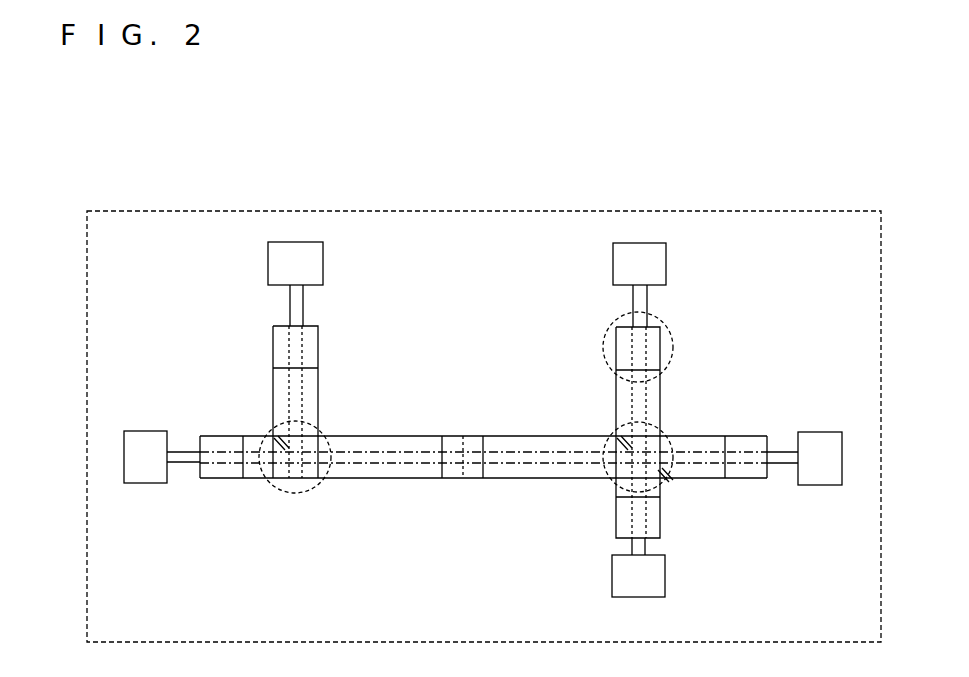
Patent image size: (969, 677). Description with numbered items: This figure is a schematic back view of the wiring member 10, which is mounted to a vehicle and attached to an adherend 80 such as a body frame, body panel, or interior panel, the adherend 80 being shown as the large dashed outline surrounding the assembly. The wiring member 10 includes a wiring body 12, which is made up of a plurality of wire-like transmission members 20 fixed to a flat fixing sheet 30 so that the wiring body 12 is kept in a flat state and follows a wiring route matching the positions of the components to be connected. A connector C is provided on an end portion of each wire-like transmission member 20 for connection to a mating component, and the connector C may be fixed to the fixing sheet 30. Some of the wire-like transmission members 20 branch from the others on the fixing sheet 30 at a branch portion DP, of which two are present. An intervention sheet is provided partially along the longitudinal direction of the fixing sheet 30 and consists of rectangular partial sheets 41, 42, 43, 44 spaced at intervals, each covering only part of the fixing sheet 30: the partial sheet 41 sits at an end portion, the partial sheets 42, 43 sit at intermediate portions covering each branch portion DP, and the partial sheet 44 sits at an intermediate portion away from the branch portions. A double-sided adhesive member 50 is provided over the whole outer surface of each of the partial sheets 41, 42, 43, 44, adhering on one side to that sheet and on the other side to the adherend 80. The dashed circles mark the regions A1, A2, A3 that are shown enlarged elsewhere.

The adherend 80 is at (540, 210).
The wiring member 10 is at (185, 303).
The connector C is at (147, 483).
The double-sided adhesive member 50 is at (497, 434).
The partial sheet 41 is at (318, 347).
The partial sheet 42 is at (300, 472).
The partial sheet 43 is at (672, 480).
The partial sheet 44 is at (463, 478).
The wiring body 12 is at (523, 392).
The wire-like transmission member 20 is at (463, 446).
The fixing sheet 30 is at (504, 436).
The branch portion DP is at (272, 436).
The region A1 is at (603, 350).
The region A2 is at (297, 494).
The region A3 is at (608, 488).